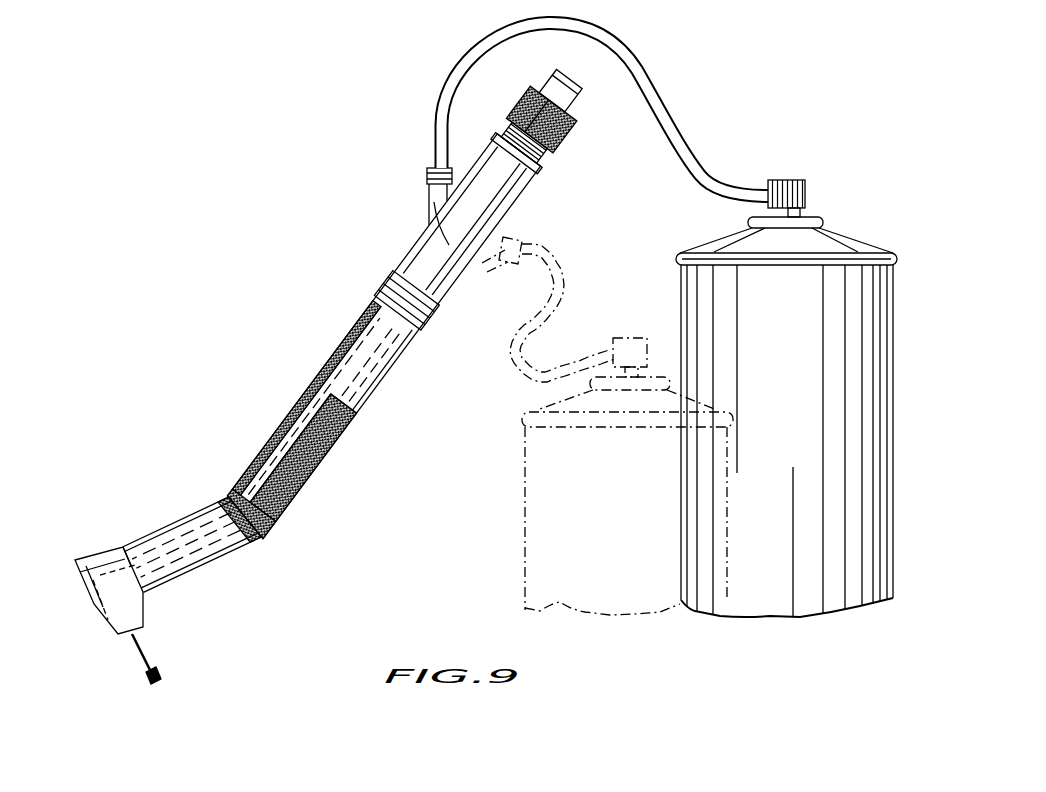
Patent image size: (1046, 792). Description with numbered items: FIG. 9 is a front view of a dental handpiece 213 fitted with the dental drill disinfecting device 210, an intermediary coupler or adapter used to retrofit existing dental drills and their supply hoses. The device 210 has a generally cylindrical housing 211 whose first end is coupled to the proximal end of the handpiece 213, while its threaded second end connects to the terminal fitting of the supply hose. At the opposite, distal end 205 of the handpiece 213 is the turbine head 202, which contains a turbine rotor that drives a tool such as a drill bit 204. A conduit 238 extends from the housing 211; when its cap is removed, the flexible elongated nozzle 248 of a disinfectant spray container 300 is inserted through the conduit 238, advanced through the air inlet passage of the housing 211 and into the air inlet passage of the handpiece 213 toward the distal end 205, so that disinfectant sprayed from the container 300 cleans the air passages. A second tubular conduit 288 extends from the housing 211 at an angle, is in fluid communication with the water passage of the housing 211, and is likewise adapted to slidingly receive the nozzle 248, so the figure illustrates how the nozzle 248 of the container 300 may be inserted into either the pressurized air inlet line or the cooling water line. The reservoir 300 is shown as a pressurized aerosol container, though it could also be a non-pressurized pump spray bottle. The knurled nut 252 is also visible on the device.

The turbine head 202 is at (87, 603).
The drill bit 204 is at (147, 665).
The distal end 205 is at (90, 546).
The dental drill disinfecting device 210 is at (401, 254).
The housing 211 is at (485, 143).
The handpiece 213 is at (307, 398).
The conduit 238 is at (427, 205).
The nozzle 248 is at (437, 145).
The knurled nut 252 is at (563, 132).
The second tubular conduit 288 is at (482, 264).
The disinfectant spray container 300 is at (842, 238).